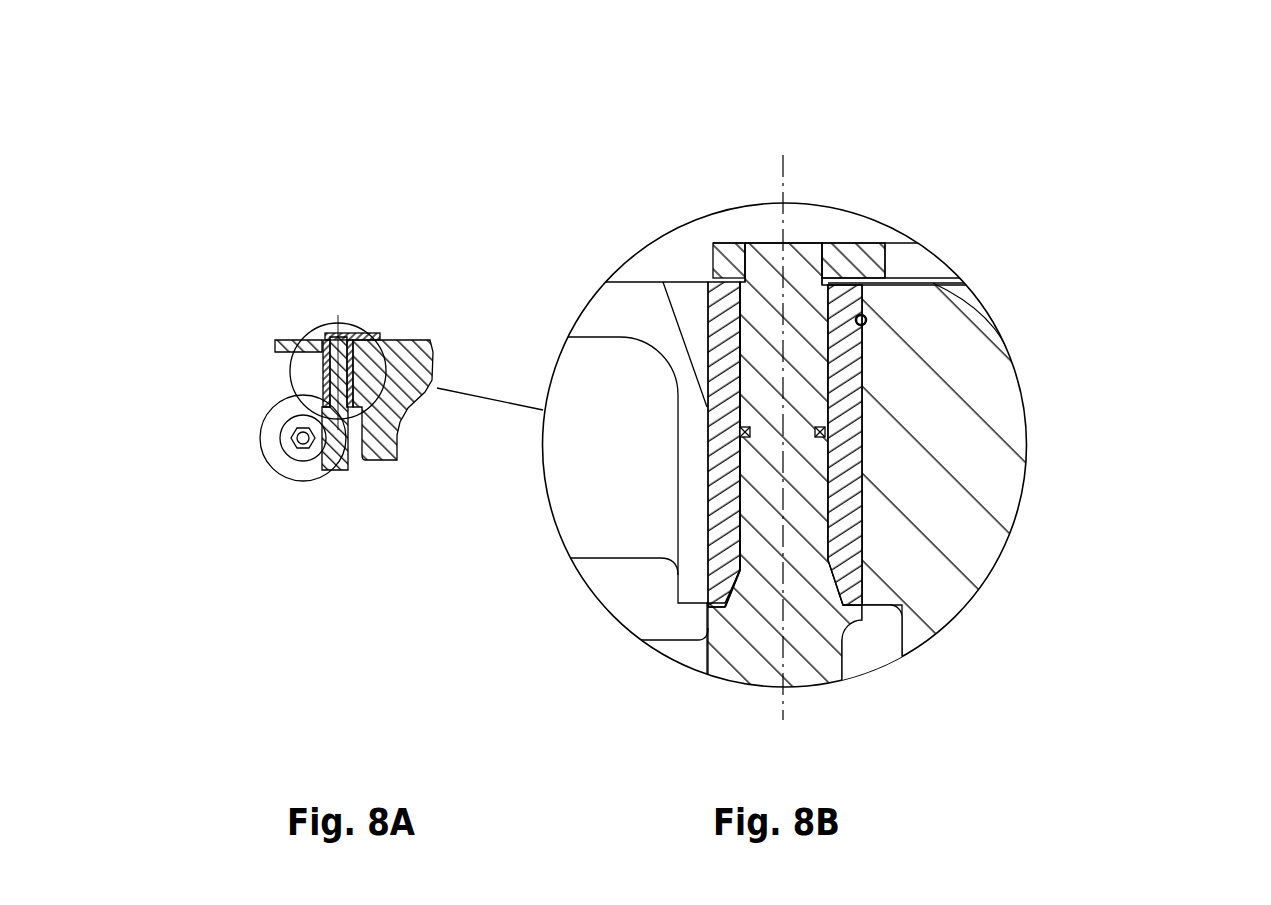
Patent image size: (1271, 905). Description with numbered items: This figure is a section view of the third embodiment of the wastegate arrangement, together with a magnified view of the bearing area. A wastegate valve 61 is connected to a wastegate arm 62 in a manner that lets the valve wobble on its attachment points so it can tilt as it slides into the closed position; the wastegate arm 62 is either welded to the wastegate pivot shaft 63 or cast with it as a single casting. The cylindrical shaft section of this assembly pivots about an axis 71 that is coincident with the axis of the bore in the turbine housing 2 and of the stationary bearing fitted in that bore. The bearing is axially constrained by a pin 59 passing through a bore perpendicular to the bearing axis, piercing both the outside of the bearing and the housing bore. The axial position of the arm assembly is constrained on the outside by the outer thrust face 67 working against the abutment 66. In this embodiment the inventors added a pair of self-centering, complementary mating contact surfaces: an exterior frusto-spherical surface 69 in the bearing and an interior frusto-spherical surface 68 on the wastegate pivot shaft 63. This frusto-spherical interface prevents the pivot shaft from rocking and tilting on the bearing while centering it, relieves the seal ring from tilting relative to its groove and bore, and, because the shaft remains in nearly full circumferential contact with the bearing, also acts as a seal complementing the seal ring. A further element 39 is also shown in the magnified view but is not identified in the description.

In FIG. 8A, the turbine housing 2 is at (400, 355).
In FIG. 8B, the turbine housing 2 is at (618, 303).
In FIG. 8B, the O-ring seal 39 is at (826, 430).
In FIG. 8B, the pin 59 is at (868, 318).
In FIG. 8A, the wastegate valve 61 is at (288, 461).
In FIG. 8A, the wastegate arm 62 is at (375, 338).
In FIG. 8B, the wastegate arm 62 is at (760, 393).
In FIG. 8A, the wastegate pivot shaft 63 is at (333, 462).
In FIG. 8B, the wastegate pivot shaft 63 is at (707, 327).
In FIG. 8B, the abutment 66 is at (838, 266).
In FIG. 8B, the outer thrust face 67 is at (837, 287).
In FIG. 8B, the interior frusto-spherical surface 68 is at (826, 589).
In FIG. 8B, the exterior frusto-spherical surface 69 is at (838, 578).
In FIG. 8B, the axis 71 is at (786, 172).